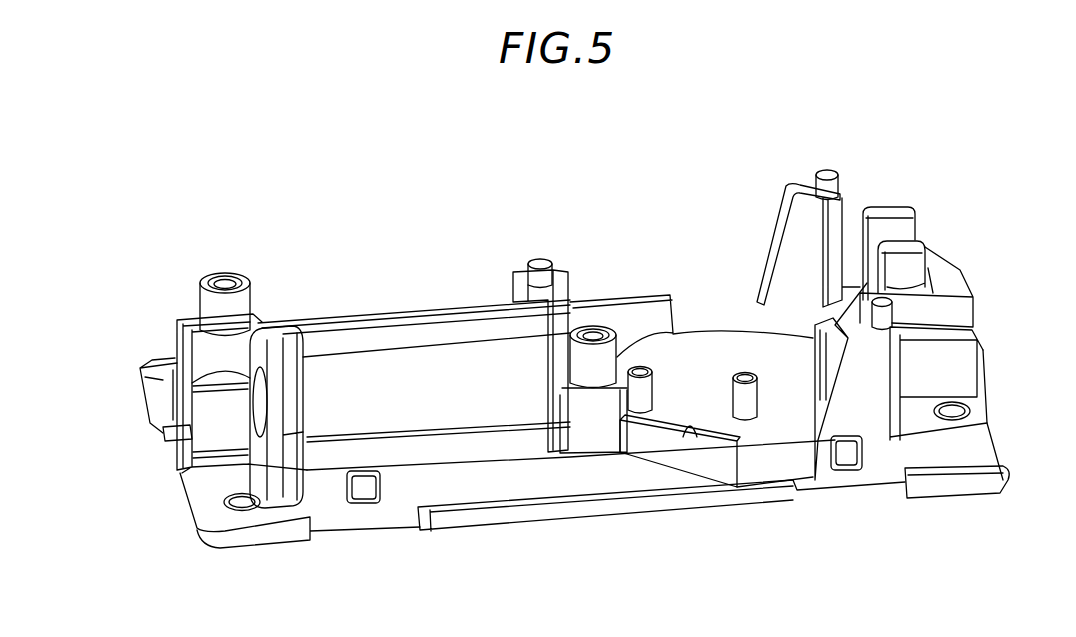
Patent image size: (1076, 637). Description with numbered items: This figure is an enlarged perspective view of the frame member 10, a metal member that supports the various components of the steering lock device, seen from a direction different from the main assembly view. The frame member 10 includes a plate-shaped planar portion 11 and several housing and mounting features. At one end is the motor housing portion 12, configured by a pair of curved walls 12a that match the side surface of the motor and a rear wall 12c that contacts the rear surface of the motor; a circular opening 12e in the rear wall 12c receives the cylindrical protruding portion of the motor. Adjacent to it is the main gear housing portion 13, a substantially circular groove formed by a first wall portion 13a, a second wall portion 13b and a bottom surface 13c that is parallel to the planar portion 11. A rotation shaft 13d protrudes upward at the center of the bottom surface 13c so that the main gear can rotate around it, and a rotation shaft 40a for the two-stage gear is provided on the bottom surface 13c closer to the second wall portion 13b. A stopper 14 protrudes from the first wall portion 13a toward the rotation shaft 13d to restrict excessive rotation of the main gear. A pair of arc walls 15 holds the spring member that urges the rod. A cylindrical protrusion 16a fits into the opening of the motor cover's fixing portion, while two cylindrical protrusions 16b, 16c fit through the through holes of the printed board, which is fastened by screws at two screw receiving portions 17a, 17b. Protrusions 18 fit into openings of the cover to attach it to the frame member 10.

The frame member 10 is at (250, 176).
The planar portion 11 is at (150, 378).
The motor housing portion 12 is at (391, 420).
The curved walls 12a is at (340, 373).
The rear wall 12c is at (262, 458).
The circular opening 12e is at (215, 372).
The main gear housing portion 13 is at (761, 468).
The first wall portion 13a is at (790, 317).
The second wall portion 13b is at (632, 320).
The bottom surface 13c is at (748, 358).
The rotation shaft 13d is at (750, 407).
The stopper 14 is at (858, 370).
The arc walls 15 is at (900, 205).
The cylindrical protrusion 16a is at (538, 260).
The cylindrical protrusion 16b is at (895, 312).
The cylindrical protrusion 16c is at (843, 178).
The screw receiving portion 17a is at (586, 372).
The screw receiving portion 17b is at (226, 313).
The protrusions 18 is at (162, 432).
The rotation shaft 40a is at (631, 405).